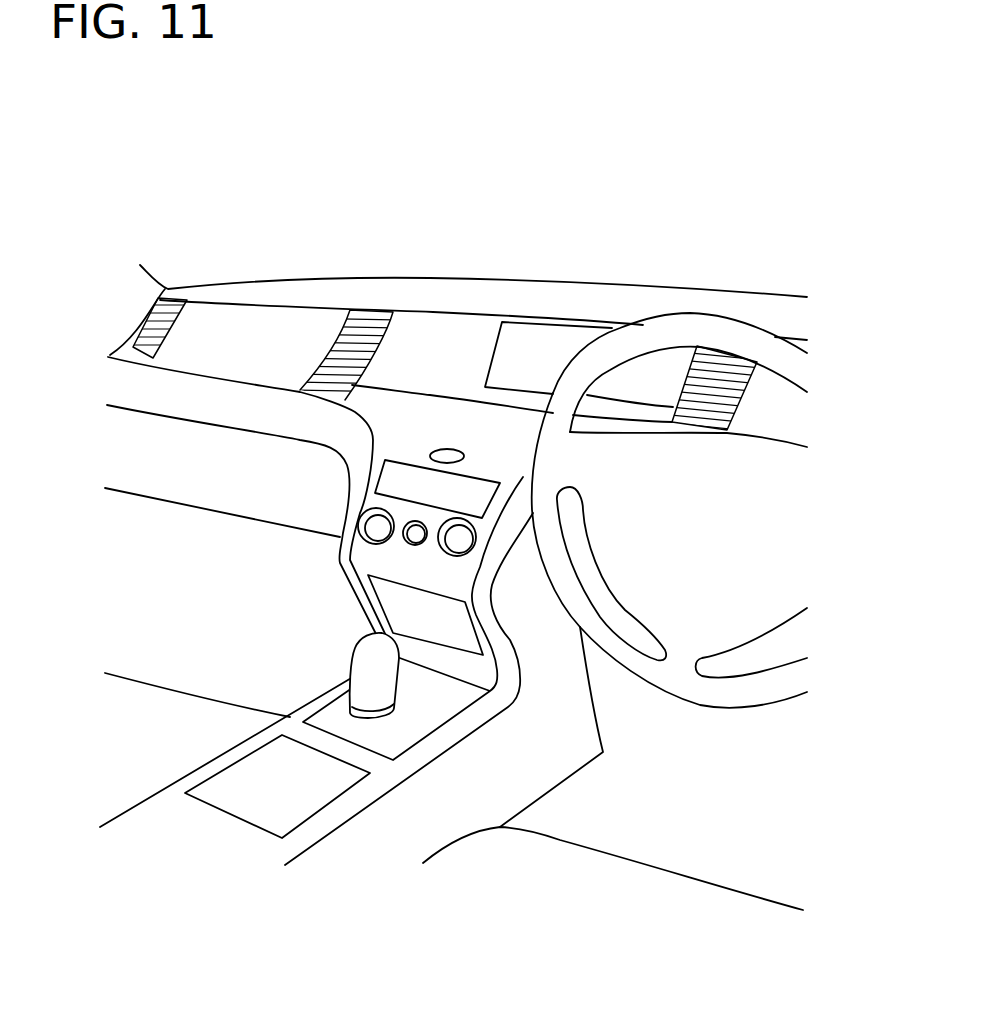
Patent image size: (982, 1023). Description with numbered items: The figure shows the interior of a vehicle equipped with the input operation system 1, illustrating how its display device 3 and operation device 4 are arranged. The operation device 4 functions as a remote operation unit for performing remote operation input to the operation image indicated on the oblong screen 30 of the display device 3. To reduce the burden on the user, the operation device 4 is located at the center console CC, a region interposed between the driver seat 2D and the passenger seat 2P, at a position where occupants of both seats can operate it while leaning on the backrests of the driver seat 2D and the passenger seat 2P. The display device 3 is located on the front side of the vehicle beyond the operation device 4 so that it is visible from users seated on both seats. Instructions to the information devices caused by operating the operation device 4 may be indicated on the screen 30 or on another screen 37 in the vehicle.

The input operation system 1 is at (670, 221).
The display device 3 is at (550, 300).
The screen 30 is at (567, 340).
The another screen 37 is at (390, 475).
The passenger seat 2P is at (153, 713).
The driver seat 2D is at (677, 897).
The operation device 4 is at (304, 816).
The center console CC is at (379, 771).